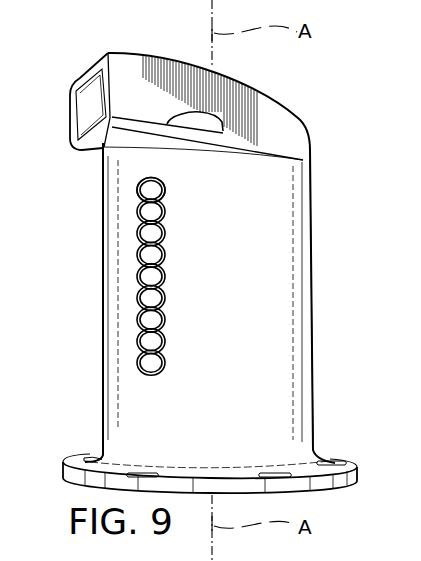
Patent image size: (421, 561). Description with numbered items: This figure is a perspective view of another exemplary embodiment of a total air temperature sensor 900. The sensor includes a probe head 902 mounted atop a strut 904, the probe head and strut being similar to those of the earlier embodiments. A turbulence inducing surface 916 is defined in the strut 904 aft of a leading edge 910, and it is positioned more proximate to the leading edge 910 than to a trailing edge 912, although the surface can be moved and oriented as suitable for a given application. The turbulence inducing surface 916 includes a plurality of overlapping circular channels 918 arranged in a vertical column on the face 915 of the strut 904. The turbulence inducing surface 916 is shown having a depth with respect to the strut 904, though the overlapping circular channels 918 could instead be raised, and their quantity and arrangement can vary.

The total air temperature sensor 900 is at (333, 114).
The handle cap 902 is at (173, 77).
The strut 904 is at (265, 257).
The leading edge 910 is at (102, 405).
The trailing edge 912 is at (310, 327).
The front face 915 is at (183, 254).
The turbulence inducing surface 916 is at (123, 263).
The overlapping circular channels 918 is at (137, 186).